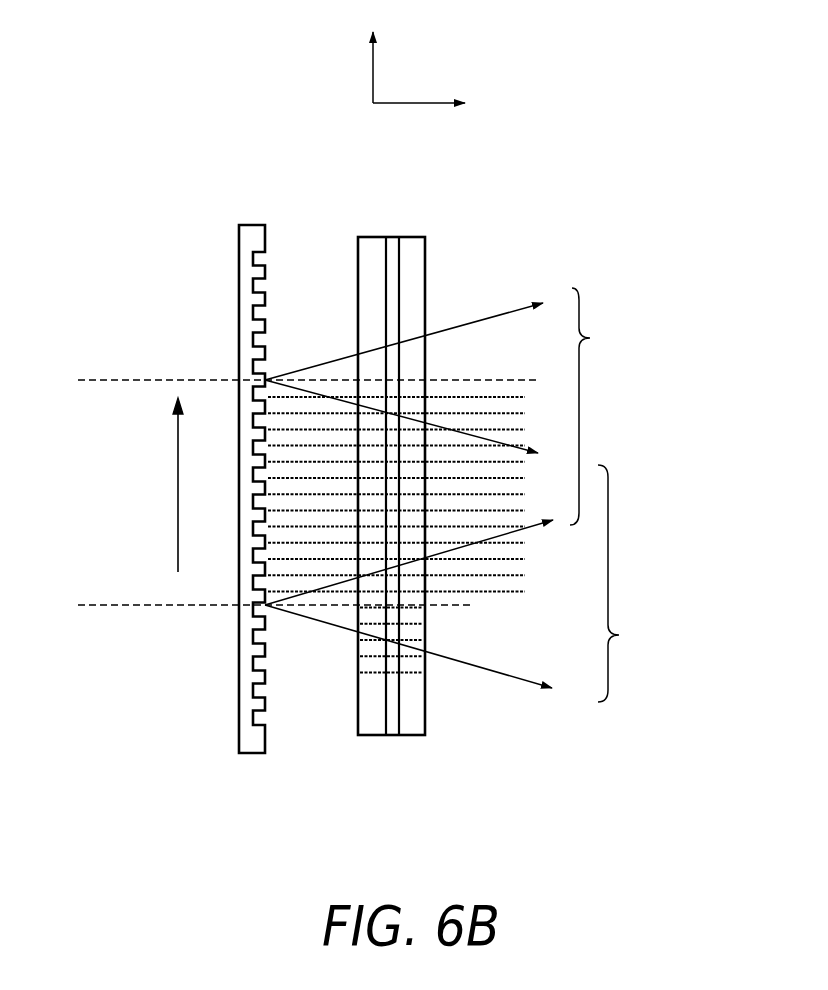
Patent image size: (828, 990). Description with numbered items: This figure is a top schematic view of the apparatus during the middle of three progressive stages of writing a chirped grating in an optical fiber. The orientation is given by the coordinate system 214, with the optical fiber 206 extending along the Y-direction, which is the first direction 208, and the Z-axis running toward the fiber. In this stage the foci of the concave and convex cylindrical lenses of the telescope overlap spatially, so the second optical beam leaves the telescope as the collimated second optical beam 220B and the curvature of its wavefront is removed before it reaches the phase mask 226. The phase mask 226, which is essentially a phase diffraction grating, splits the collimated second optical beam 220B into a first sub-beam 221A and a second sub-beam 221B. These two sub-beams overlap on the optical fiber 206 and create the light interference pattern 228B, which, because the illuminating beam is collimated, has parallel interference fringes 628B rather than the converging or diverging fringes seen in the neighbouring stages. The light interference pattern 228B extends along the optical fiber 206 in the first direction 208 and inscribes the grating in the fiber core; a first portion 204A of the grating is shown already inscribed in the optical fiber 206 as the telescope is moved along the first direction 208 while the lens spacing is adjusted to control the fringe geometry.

The coordinate system 214 is at (344, 75).
The phase mask 226 is at (238, 317).
The optical fiber 206 is at (427, 290).
The collimated second optical beam 220B is at (102, 402).
The first direction 208 is at (178, 518).
The parallel interference fringes 628B is at (473, 460).
The first portion of the grating 204A is at (412, 623).
The first sub-beam 221A is at (466, 406).
The light interference pattern 228B is at (504, 556).
The second sub-beam 221B is at (476, 583).